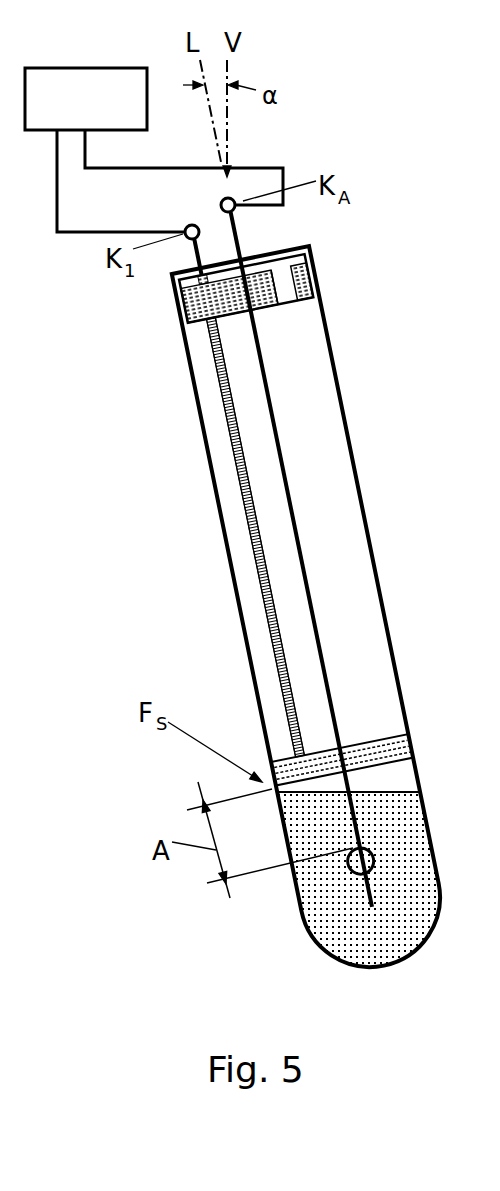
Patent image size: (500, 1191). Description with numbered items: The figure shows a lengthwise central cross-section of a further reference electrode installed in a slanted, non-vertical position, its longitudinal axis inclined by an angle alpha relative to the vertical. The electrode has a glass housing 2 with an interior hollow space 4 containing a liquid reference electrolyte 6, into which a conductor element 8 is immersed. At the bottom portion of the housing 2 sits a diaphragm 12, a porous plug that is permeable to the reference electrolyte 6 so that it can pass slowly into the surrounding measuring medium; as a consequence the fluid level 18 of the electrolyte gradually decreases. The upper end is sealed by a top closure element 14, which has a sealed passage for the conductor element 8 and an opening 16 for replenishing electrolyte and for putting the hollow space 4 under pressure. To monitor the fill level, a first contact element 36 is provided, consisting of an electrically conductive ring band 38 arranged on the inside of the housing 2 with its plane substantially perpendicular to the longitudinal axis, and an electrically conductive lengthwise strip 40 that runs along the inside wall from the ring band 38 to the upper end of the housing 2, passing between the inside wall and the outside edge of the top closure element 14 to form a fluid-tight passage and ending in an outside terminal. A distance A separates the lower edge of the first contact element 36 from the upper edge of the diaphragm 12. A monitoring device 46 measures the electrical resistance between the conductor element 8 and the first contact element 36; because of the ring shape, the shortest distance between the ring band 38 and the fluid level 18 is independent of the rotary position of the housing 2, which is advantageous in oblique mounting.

The glass housing 2 is at (363, 512).
The interior hollow space 4 is at (318, 410).
The liquid reference electrolyte 6 is at (413, 903).
The conductor element 8 is at (329, 690).
The diaphragm 12 is at (352, 870).
The top closure element 14 is at (318, 286).
The opening 16 is at (310, 260).
The fluid level 18 is at (392, 792).
The first contact element 36 is at (222, 466).
The ring band 38 is at (378, 740).
The lengthwise strip 40 is at (268, 613).
The monitoring device 46 is at (112, 80).